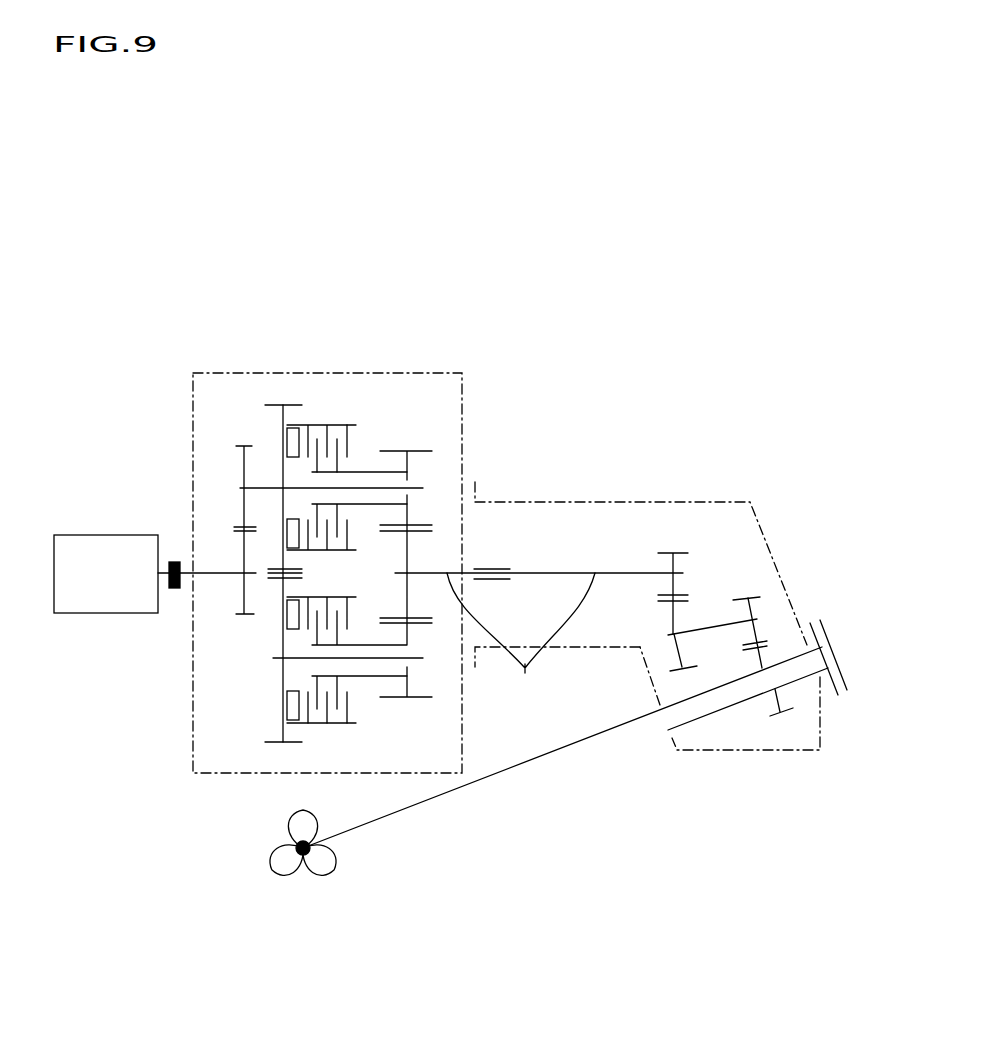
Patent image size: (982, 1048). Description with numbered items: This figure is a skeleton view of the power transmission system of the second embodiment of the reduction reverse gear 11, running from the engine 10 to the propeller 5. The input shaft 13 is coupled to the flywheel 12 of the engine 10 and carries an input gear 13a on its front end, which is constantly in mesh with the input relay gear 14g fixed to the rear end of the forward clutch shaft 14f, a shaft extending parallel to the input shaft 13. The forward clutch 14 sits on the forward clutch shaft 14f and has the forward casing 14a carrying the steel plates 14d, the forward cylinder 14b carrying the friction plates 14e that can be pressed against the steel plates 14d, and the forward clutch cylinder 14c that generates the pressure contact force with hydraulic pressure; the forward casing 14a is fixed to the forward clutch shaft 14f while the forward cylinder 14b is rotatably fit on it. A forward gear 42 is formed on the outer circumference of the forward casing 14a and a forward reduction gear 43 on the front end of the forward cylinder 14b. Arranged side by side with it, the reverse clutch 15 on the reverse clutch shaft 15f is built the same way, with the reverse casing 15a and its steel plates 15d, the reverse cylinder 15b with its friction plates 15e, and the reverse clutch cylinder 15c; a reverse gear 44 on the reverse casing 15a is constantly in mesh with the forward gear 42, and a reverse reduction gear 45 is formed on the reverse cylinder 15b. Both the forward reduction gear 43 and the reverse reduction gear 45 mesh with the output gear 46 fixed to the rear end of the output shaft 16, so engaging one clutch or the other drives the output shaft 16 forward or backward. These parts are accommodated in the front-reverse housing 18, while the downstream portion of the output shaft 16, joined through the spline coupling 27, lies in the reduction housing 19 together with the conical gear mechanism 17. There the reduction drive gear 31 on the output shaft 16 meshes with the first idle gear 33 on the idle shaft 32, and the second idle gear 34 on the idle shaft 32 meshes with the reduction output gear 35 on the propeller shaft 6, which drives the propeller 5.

The propeller 5 is at (278, 858).
The propeller shaft 6 is at (528, 765).
The engine 10 is at (102, 545).
The reduction reverse gear 11 is at (559, 441).
The flywheel 12 is at (174, 590).
The input shaft 13 is at (223, 577).
The input gear 13a is at (243, 617).
The forward clutch 14 is at (308, 389).
The forward casing 14a is at (319, 424).
The forward cylinder 14b is at (363, 470).
The forward clutch cylinder 14c is at (289, 443).
The steel plates 14d is at (346, 438).
The friction plates 14e is at (345, 523).
The forward clutch shaft 14f is at (416, 487).
The input relay gear 14g is at (243, 527).
The reverse clutch 15 is at (342, 745).
The reverse casing 15a is at (316, 725).
The reverse cylinder 15b is at (360, 680).
The reverse clutch cylinder 15c is at (286, 624).
The steel plates 15d is at (348, 705).
The friction plates 15e is at (350, 617).
The reverse clutch shaft 15f is at (418, 688).
The output shaft 16 is at (539, 634).
The conical gear mechanism 17 is at (742, 566).
The front-reverse housing 18 is at (217, 775).
The reduction housing 19 is at (725, 752).
The coupling 27 is at (497, 568).
The reduction drive gear 31 is at (675, 553).
The idle shaft 32 is at (702, 628).
The first idle gear 33 is at (682, 650).
The second idle gear 34 is at (750, 608).
The reduction output gear 35 is at (785, 707).
The forward gear 42 is at (277, 402).
The forward reduction gear 43 is at (414, 451).
The reverse gear 44 is at (270, 745).
The reverse reduction gear 45 is at (417, 660).
The output gear 46 is at (405, 557).